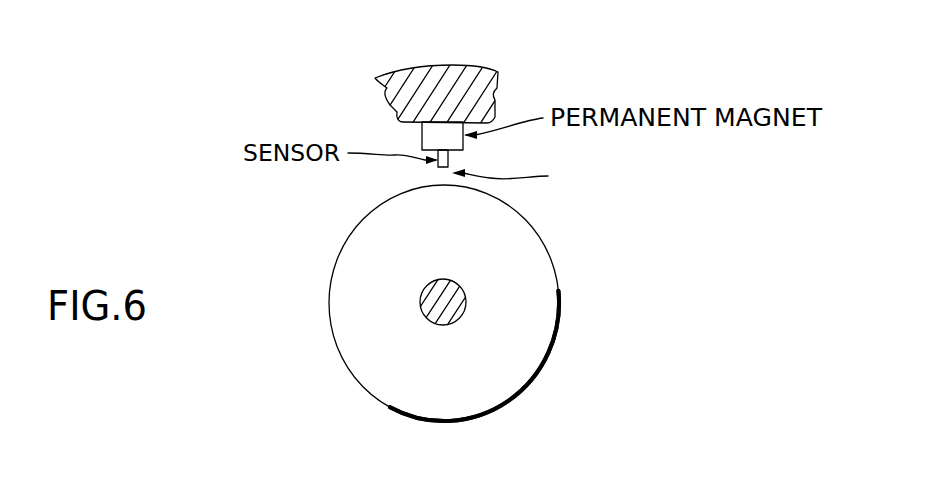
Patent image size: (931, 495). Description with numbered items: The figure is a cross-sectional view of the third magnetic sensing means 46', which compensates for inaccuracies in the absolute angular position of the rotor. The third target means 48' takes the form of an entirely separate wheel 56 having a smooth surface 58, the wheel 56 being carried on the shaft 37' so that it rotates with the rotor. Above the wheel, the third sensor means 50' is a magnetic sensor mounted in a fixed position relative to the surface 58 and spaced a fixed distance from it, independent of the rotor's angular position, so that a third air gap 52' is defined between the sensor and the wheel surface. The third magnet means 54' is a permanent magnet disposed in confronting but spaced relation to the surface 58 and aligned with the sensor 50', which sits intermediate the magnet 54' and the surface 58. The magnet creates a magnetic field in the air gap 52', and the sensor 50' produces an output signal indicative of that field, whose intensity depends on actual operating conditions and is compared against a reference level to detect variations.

The third magnet means 54' is at (457, 95).
The third sensor means 50' is at (484, 154).
The third air gap 52' is at (473, 192).
The third magnetic sensing means 46' is at (496, 303).
The third target means 48' is at (521, 356).
The smooth surface 58 is at (522, 392).
The shaft 37' is at (461, 302).
The wheel 56 is at (363, 369).